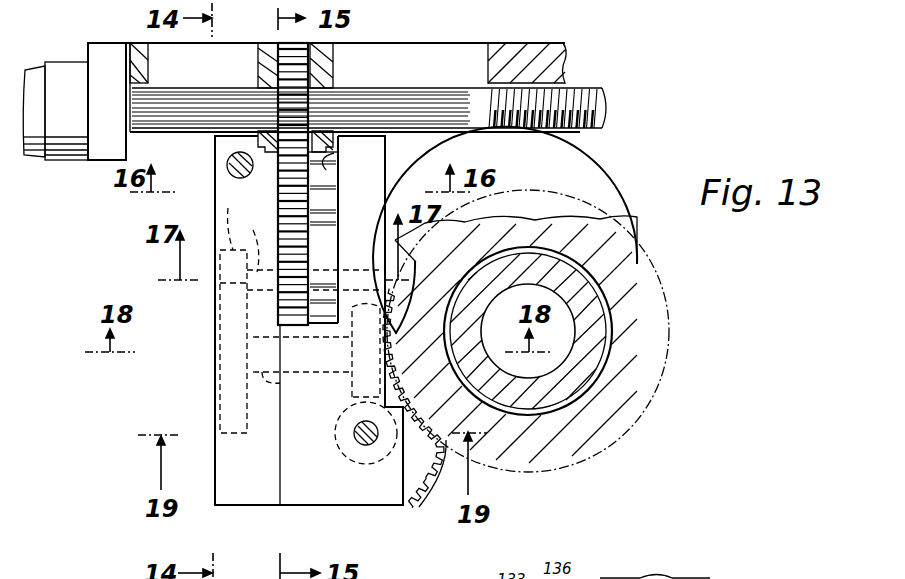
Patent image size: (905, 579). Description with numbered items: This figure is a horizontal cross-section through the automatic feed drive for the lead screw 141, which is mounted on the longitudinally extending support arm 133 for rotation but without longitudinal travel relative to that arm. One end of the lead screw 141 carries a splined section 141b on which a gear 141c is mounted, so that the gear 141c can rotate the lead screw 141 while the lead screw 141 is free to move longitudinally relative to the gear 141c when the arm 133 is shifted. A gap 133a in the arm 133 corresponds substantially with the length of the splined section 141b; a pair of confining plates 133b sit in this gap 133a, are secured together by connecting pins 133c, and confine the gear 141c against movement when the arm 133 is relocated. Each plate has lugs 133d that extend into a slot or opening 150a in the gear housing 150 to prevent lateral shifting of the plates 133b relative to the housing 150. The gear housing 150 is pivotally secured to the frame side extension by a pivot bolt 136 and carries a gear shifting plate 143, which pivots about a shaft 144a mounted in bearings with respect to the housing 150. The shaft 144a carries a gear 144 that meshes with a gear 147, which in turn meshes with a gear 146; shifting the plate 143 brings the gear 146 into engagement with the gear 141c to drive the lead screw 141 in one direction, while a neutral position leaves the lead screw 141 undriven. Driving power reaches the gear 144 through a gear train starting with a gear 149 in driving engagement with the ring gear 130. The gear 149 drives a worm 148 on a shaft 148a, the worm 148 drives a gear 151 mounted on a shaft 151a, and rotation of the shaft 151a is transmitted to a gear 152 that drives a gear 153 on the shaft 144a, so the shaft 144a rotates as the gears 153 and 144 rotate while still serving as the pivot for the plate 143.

The ring gear 130 is at (593, 437).
The longitudinally extending support arm 133 is at (530, 42).
The gap 133a is at (488, 48).
The confining plates 133b is at (257, 53).
The connecting pins 133c is at (288, 43).
The lugs 133d is at (257, 147).
The pivot bolt 136 is at (227, 163).
The lead screw 141 is at (606, 97).
The splined section 141b is at (378, 90).
The gear 141c is at (258, 70).
The gear shifting plate 143 is at (340, 156).
The gear 144 is at (296, 315).
The shaft 144a is at (252, 241).
The gear 146 is at (302, 185).
The gear 147 is at (300, 258).
The worm 148 is at (335, 427).
The shaft 148a is at (357, 445).
The gear 149 is at (418, 470).
The gear housing 150 is at (218, 457).
The slot or opening 150a is at (329, 168).
The gear 151 is at (340, 394).
The shaft 151a is at (264, 375).
The gear 152 is at (227, 328).
The gear 153 is at (236, 219).